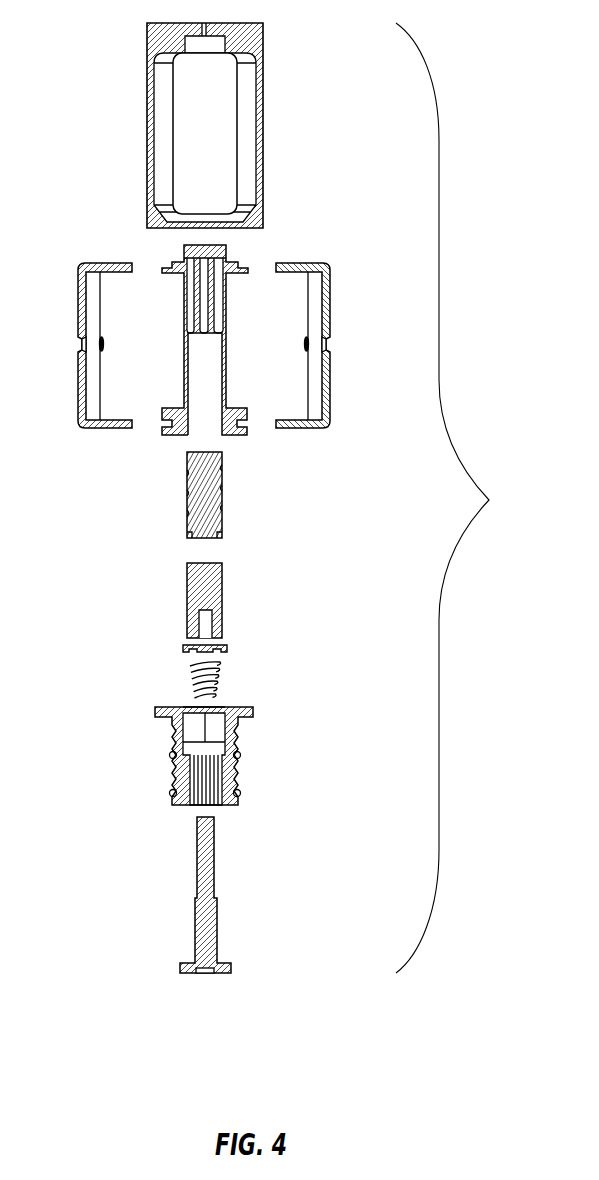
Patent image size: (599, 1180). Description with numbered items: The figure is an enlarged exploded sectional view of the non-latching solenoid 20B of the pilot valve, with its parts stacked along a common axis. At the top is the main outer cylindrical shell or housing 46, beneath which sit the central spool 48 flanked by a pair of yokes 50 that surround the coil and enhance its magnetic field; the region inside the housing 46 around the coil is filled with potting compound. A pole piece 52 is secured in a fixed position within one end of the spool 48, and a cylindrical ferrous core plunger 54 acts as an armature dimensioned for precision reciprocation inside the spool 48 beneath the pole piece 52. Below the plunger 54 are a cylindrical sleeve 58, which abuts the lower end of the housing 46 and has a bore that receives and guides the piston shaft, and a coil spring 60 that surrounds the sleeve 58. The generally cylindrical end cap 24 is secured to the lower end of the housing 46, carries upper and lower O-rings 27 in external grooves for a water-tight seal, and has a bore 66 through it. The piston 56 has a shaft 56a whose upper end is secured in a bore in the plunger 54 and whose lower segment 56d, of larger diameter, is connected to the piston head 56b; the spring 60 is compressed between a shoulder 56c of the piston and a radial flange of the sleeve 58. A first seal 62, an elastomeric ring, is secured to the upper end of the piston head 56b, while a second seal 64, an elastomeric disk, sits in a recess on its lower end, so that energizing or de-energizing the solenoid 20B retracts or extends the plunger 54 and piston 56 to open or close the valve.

The non-latching solenoid 20B is at (489, 500).
The housing 46 is at (265, 134).
The yokes 50 is at (78, 315).
The central spool 48 is at (225, 370).
The pole piece 52 is at (222, 498).
The core plunger 54 is at (222, 593).
The sleeve 58 is at (227, 656).
The coil spring 60 is at (217, 677).
The end cap 24 is at (220, 775).
The O-rings 27 is at (239, 755).
The bore 66 is at (195, 806).
The piston 56 is at (212, 918).
The piston shaft 56a is at (214, 837).
The piston head 56b is at (231, 970).
The shoulder 56c is at (217, 898).
The lower segment 56d is at (195, 933).
The first seal 62 is at (220, 965).
The second seal 64 is at (205, 973).